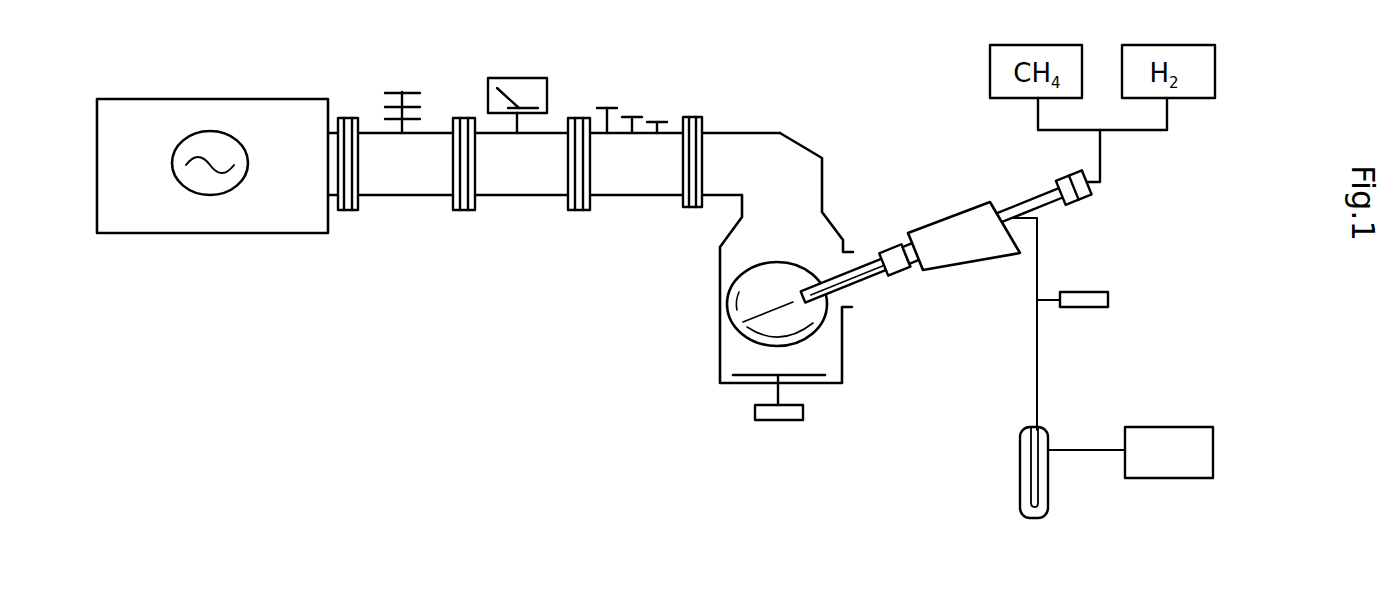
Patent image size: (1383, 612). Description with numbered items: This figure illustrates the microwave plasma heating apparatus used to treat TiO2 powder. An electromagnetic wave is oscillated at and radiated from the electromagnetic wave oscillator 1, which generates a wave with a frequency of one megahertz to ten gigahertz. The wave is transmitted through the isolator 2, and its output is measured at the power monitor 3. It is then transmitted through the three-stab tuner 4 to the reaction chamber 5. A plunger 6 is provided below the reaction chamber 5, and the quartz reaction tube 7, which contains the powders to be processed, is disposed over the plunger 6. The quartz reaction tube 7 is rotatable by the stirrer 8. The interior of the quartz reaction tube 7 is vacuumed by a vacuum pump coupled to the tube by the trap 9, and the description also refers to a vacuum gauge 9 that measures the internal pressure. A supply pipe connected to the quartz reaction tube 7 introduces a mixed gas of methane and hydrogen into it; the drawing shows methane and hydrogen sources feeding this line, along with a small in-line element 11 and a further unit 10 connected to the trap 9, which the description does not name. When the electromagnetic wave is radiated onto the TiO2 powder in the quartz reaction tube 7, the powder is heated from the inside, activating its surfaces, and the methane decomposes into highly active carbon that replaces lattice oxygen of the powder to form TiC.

The electromagnetic wave oscillator 1 is at (218, 98).
The isolator 2 is at (411, 92).
The power monitor 3 is at (516, 78).
The three-stab tuner 4 is at (638, 101).
The reaction chamber 5 is at (720, 282).
The plunger 6 is at (770, 421).
The quartz reaction tube 7 is at (875, 292).
The stirrer 8 is at (950, 226).
The trap 9 is at (1022, 473).
The flow controller 10 is at (1164, 442).
The valve 11 is at (1099, 292).